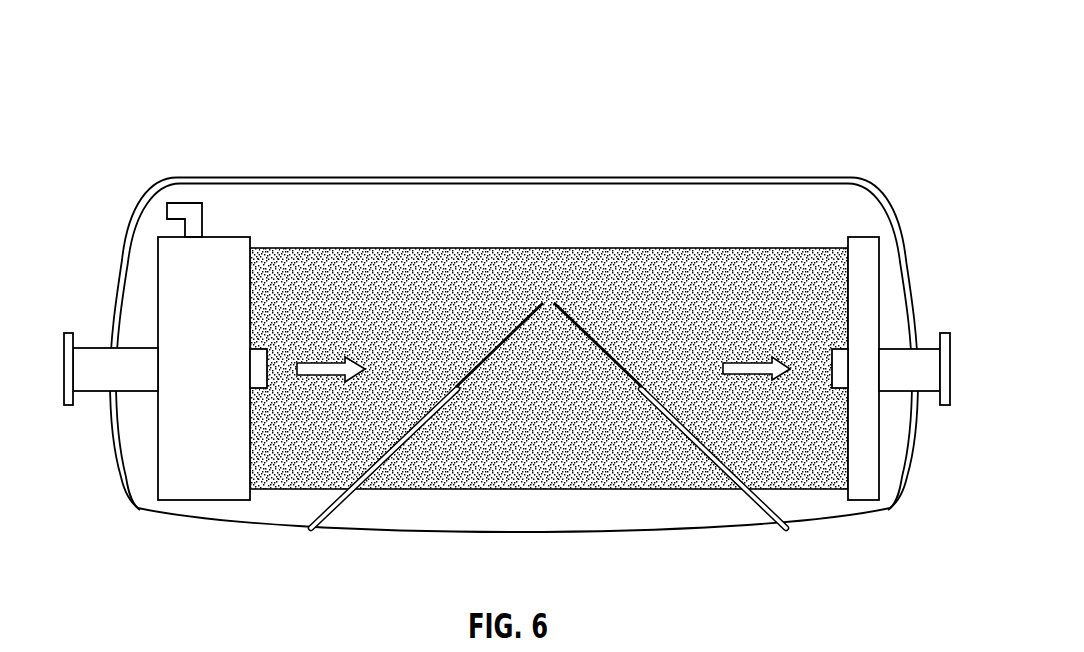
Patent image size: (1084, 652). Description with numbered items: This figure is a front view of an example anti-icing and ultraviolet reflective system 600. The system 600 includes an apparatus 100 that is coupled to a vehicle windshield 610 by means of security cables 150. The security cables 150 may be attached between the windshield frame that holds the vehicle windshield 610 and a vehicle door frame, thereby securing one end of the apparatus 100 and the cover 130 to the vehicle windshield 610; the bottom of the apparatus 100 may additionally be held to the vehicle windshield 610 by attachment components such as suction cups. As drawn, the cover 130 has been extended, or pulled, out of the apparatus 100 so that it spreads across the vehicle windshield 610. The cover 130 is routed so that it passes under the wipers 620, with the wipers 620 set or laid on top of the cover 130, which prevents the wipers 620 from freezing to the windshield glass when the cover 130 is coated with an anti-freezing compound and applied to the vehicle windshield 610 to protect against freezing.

The anti-icing and ultraviolet reflective system 600 is at (121, 97).
The vehicle windshield 610 is at (868, 186).
The cover 130 is at (680, 280).
The apparatus 100 is at (214, 376).
The security cables 150 is at (108, 376).
The wipers 620 is at (310, 527).